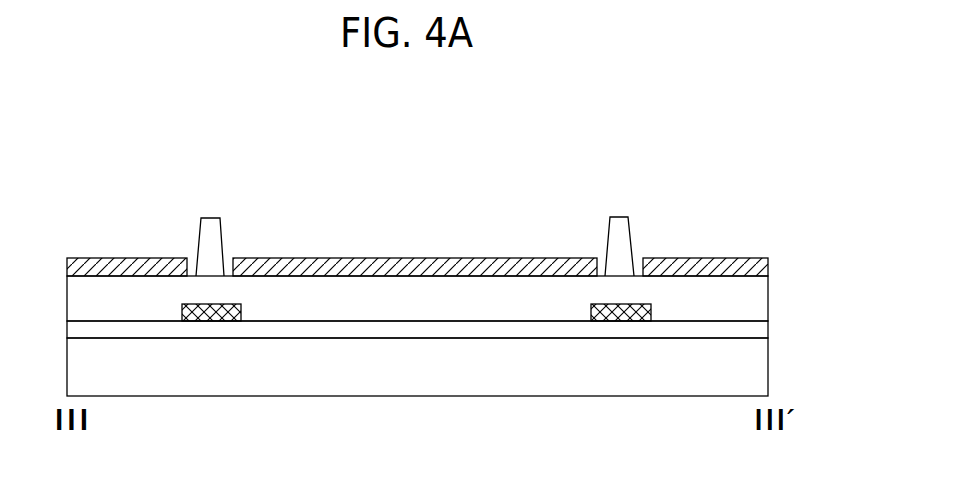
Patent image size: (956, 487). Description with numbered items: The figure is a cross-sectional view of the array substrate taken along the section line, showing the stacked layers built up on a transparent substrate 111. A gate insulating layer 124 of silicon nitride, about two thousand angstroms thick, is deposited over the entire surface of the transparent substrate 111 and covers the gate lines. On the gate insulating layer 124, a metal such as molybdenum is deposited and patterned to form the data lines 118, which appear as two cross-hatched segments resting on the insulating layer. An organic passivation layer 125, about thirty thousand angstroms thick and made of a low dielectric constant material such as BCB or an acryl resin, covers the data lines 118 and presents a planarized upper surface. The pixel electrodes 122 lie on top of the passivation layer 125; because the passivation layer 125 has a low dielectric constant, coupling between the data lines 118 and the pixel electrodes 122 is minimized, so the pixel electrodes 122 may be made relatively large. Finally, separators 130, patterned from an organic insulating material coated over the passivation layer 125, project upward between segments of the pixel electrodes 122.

The transparent substrate 111 is at (768, 372).
The data lines 118 is at (620, 321).
The pixel electrodes 122 is at (768, 264).
The gate insulating layer 124 is at (768, 334).
The passivation layer 125 is at (768, 298).
The separators 130 is at (620, 228).